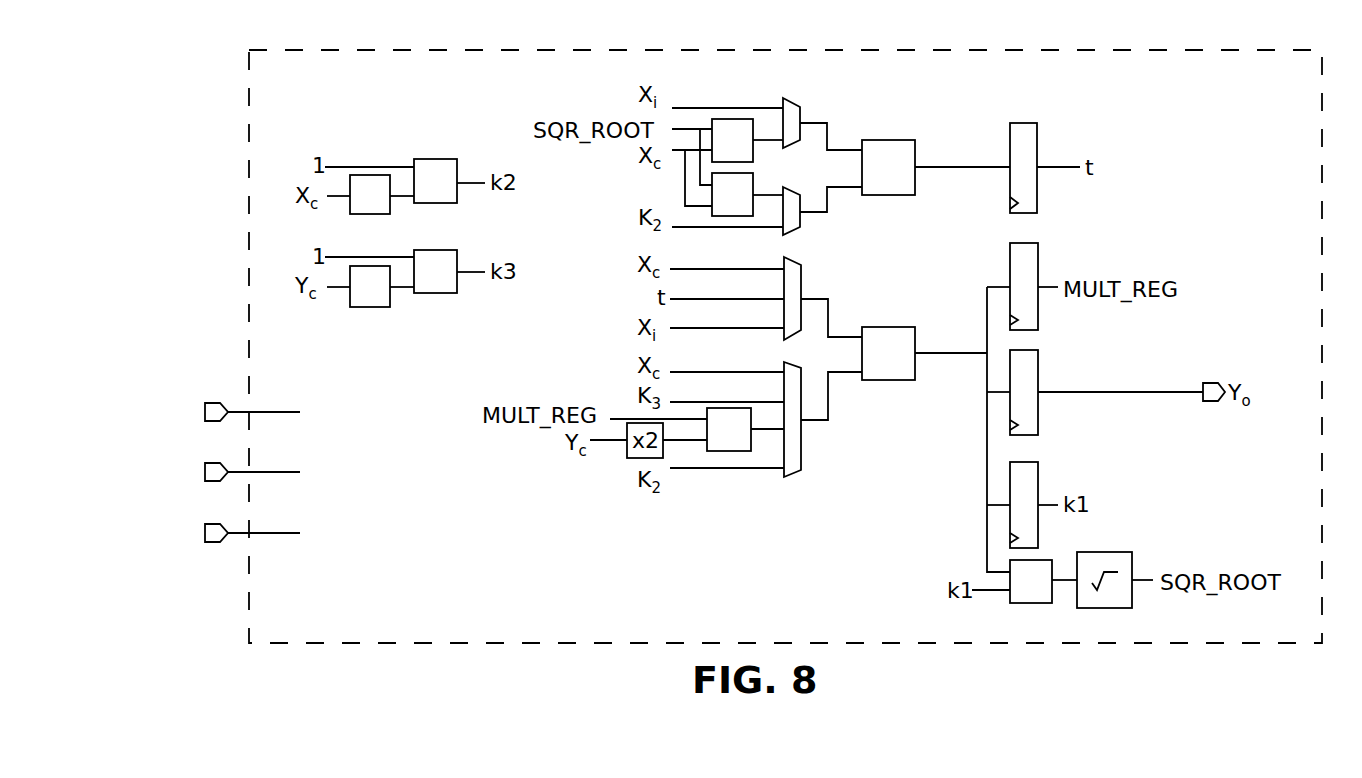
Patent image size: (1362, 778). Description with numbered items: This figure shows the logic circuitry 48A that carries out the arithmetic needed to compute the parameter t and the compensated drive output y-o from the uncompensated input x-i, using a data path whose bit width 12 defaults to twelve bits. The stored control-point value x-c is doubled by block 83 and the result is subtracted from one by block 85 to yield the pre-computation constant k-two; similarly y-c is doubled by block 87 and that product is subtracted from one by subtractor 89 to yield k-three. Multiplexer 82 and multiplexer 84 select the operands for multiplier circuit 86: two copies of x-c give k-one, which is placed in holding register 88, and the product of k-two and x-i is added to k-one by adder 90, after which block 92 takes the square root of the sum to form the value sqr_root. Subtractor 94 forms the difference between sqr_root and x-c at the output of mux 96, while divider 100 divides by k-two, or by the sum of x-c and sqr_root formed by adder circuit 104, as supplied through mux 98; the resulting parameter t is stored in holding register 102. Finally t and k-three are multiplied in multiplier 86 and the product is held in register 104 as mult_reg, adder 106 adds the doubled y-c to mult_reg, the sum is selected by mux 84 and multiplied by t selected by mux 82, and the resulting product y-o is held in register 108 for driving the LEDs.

The logic circuitry 48A is at (1263, 55).
The 12 bit data path width 12 is at (283, 423).
The multiply-by-two block 83 is at (390, 210).
The subtractor block 85 is at (449, 159).
The multiply-by-two block 87 is at (390, 302).
The subtractor 89 is at (457, 290).
The subtractor 94 is at (740, 119).
The multiplexer 96 is at (802, 108).
The multiplexer 98 is at (802, 226).
The divider 100 is at (900, 140).
The holding register 102 is at (1040, 130).
The adder circuit / register 104 is at (738, 216).
The multiplexer 82 is at (803, 273).
The multiplexer 84 is at (803, 452).
The multiplier circuit 86 is at (902, 327).
The adder 106 is at (753, 440).
The register 108 is at (1040, 356).
The holding register 88 is at (1040, 466).
The adder 90 is at (1035, 603).
The square root block 92 is at (1120, 552).